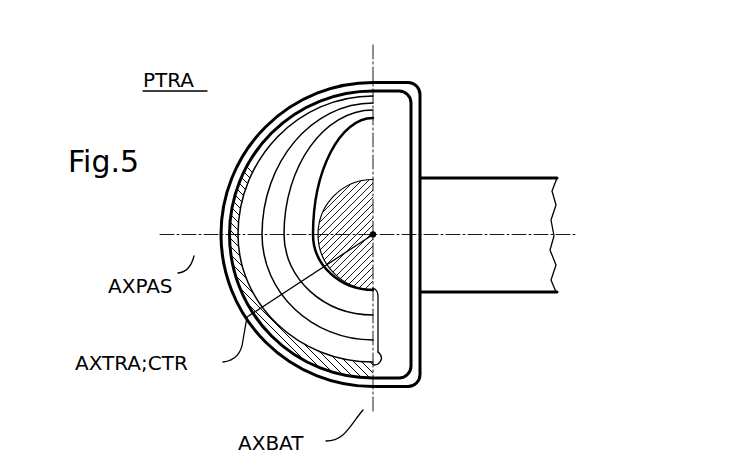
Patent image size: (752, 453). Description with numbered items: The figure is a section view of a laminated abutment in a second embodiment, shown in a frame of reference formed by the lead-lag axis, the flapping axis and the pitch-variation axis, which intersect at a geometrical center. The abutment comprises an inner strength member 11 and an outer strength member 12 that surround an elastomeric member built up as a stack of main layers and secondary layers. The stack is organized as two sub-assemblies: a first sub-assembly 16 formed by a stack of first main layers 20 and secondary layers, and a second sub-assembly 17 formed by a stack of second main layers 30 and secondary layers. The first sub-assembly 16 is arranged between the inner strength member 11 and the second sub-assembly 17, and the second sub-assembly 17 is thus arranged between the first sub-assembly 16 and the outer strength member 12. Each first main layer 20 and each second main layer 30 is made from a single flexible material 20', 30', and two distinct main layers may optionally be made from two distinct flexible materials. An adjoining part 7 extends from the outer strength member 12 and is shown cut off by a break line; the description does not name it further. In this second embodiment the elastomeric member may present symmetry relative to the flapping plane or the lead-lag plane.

The tube / conduit 7 is at (523, 177).
The inner strength member 11 is at (362, 223).
The outer strength member 12 is at (381, 96).
The first sub-assembly 16 is at (380, 322).
The second sub-assembly 17 is at (386, 360).
The first main layer 20 is at (410, 194).
The flexible material of the first main layer 20' is at (392, 187).
The second main layer 30 is at (240, 216).
The flexible material of the second main layer 30' is at (317, 200).